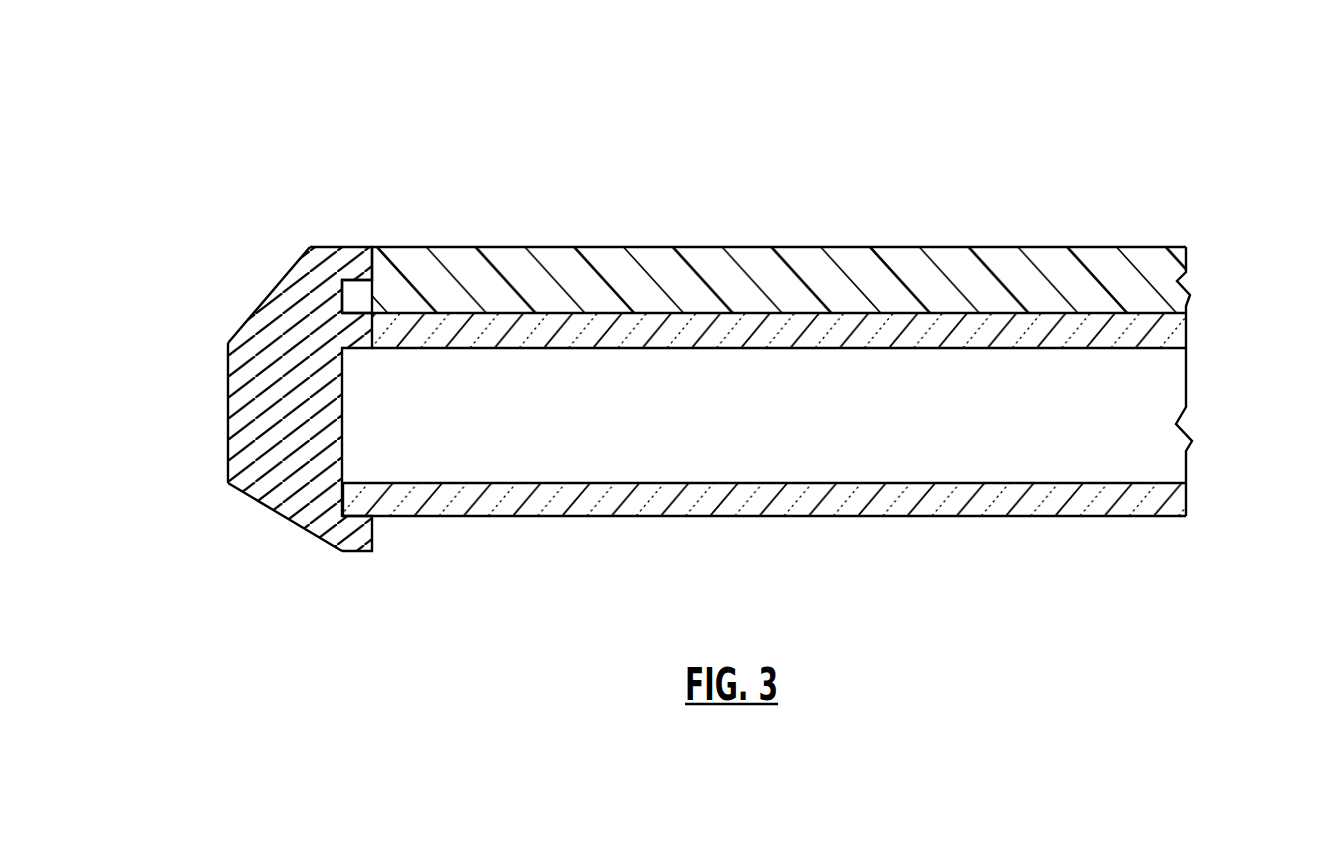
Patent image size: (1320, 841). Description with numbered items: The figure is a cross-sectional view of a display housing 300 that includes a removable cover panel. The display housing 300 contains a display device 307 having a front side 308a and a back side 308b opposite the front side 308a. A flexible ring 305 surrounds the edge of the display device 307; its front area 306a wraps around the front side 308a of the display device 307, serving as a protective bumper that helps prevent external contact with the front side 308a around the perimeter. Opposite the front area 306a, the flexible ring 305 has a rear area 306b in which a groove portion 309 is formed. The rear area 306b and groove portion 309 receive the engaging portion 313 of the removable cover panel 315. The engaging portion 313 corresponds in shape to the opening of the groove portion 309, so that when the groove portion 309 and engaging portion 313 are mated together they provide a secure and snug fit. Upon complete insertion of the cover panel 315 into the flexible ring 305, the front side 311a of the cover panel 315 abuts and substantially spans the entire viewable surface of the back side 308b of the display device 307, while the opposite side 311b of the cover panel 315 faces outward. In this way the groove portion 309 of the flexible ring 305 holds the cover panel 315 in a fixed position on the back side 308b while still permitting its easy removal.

The display housing 300 is at (346, 73).
The flexible ring 305 is at (228, 385).
The front area 306a is at (252, 524).
The rear area 306b is at (260, 270).
The display device 307 is at (607, 518).
The front side 308a is at (1200, 504).
The back side 308b is at (1200, 337).
The groove portion 309 is at (337, 283).
The front side of the cover panel 311a is at (1199, 313).
The back side of the cover panel 311b is at (1199, 247).
The engaging portion 313 is at (365, 298).
The removable cover panel 315 is at (538, 248).